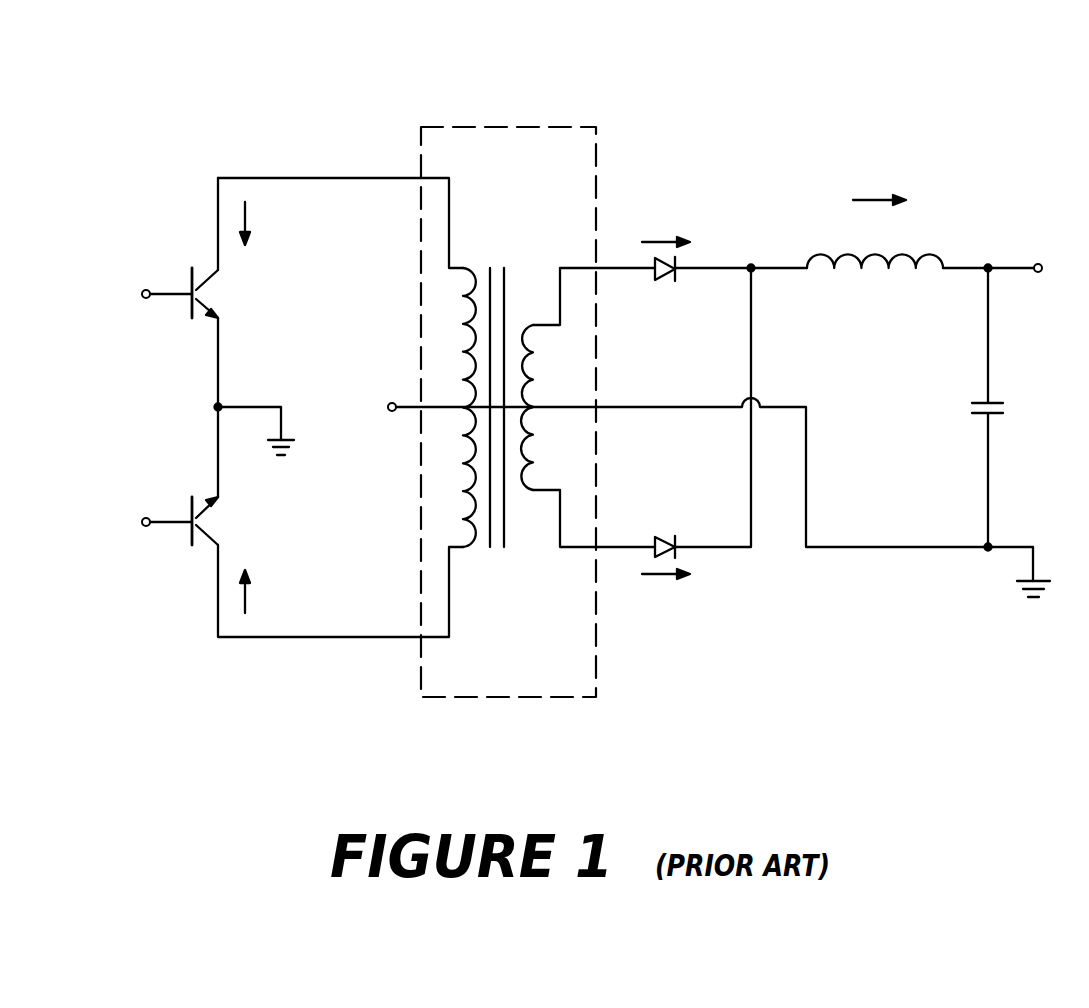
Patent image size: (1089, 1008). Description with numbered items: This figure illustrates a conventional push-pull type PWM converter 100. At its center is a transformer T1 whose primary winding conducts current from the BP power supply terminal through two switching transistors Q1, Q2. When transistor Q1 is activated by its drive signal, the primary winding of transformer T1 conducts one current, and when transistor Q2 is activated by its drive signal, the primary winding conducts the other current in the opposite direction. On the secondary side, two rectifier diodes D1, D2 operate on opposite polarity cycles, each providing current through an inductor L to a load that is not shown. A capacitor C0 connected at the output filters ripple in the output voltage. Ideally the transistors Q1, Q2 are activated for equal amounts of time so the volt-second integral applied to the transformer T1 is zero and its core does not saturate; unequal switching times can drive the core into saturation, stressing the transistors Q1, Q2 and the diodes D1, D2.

The prior art push-pull converter circuit 100 is at (945, 95).
The transistor Q1 is at (245, 260).
The transistor Q2 is at (245, 561).
The transformer T1 is at (521, 396).
The diode D1 is at (666, 255).
The diode D2 is at (666, 563).
The inductor L is at (875, 208).
The capacitor C0 is at (1013, 407).